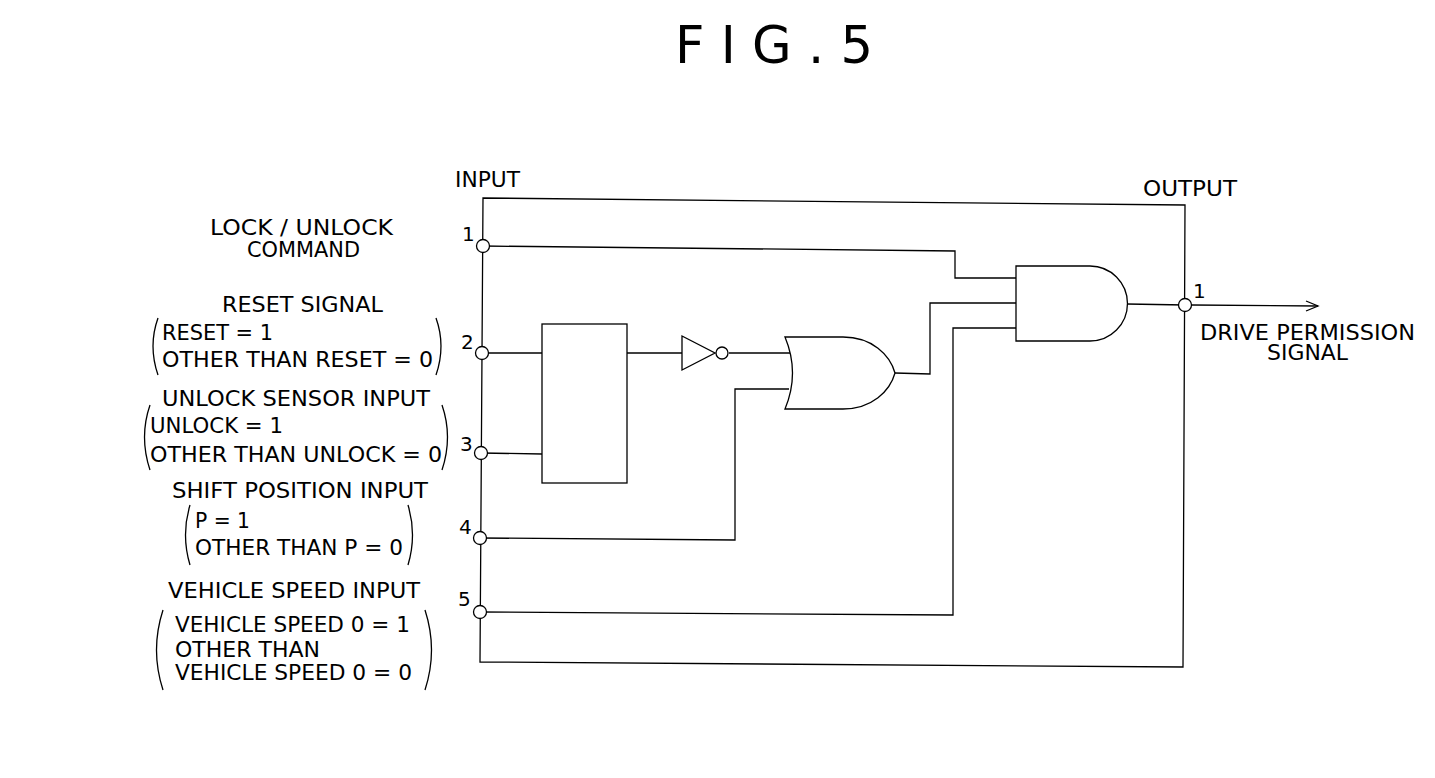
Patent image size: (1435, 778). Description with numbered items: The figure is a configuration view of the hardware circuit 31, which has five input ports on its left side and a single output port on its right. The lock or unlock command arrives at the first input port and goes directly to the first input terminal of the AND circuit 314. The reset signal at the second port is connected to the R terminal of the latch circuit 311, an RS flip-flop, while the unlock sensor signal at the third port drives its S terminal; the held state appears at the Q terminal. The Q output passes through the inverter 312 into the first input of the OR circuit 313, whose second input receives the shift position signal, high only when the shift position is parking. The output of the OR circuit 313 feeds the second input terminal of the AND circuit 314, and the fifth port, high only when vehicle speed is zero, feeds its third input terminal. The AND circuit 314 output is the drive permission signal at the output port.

The hardware circuit 31 is at (1078, 204).
The latch circuit 311 is at (583, 323).
The inverter 312 is at (702, 340).
The OR circuit 313 is at (826, 410).
The AND circuit 314 is at (1064, 342).